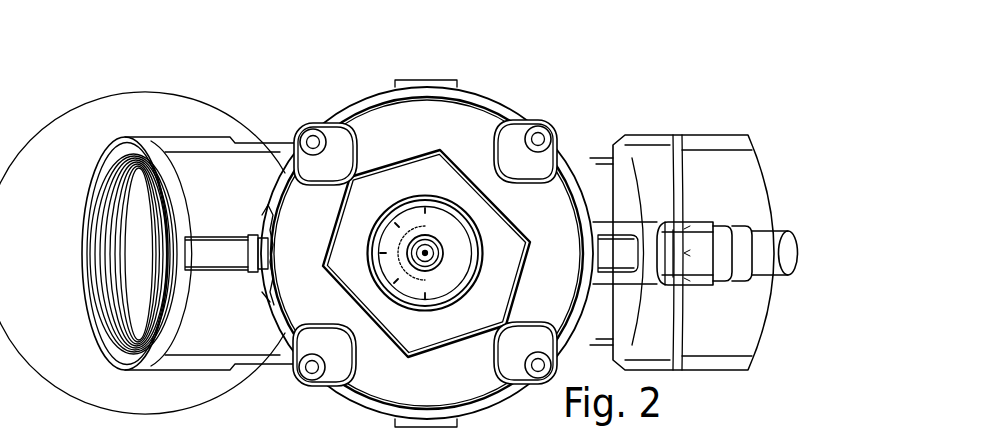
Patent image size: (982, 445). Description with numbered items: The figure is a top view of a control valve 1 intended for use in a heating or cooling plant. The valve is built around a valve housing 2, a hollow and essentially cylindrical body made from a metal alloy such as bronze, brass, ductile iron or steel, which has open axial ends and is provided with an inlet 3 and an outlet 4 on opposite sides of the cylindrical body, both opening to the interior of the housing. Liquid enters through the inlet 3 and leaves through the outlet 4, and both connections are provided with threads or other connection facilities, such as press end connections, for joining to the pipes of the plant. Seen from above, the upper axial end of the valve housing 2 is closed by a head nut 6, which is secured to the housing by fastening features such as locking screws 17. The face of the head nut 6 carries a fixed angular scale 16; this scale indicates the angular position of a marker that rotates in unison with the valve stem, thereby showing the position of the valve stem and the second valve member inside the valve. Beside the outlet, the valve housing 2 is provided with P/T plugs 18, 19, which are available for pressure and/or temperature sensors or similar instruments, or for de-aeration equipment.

The control valve 1 is at (247, 58).
The valve housing 2 is at (328, 108).
The inlet 3 is at (123, 261).
The outlet 4 is at (773, 207).
The head nut 6 is at (472, 123).
The fixed angular scale 16 is at (442, 225).
The locking screw 17 is at (546, 136).
The P/T plug 18 is at (695, 230).
The P/T plug 19 is at (747, 226).